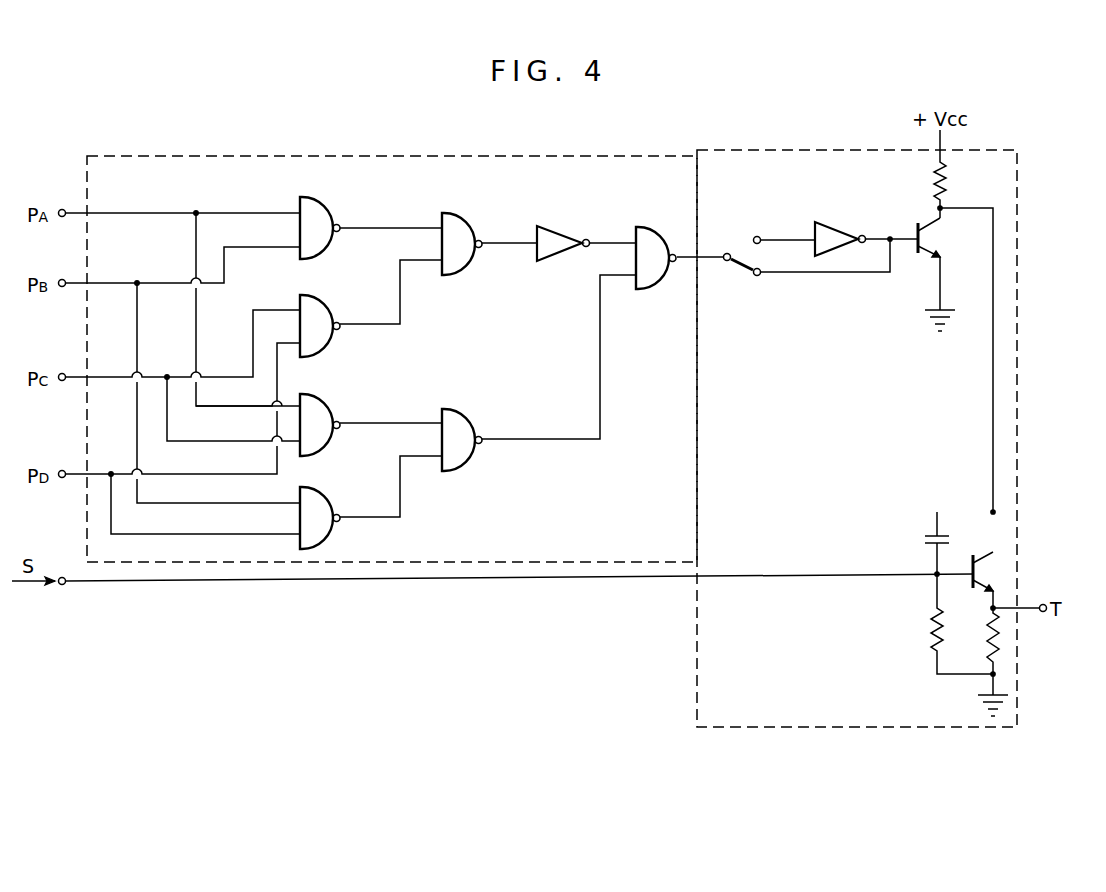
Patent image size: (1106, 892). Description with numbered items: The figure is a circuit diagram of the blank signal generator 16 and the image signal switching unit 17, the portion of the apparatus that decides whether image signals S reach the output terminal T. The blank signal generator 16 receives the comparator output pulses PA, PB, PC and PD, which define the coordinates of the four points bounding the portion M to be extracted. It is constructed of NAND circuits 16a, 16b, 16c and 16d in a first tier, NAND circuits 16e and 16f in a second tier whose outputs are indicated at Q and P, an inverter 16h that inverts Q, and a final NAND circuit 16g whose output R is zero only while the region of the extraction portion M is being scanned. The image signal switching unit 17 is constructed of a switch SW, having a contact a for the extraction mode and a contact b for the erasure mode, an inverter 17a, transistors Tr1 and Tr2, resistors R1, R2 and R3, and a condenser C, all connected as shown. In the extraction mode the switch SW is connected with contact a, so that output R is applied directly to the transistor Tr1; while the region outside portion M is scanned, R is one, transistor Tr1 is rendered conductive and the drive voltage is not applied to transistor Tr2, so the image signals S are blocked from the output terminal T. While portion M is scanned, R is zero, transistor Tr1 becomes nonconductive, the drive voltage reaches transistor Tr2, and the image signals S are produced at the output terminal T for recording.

The blank signal generator 16 is at (450, 166).
The NAND circuit 16a is at (327, 210).
The NAND circuit 16b is at (327, 306).
The NAND circuit 16c is at (322, 403).
The NAND circuit 16d is at (327, 498).
The NAND circuit 16e is at (459, 214).
The NAND circuit 16f is at (458, 412).
The NAND circuit 16g is at (655, 227).
The inverter 16h is at (567, 228).
The image signal switching unit 17 is at (815, 158).
The inverter 17a is at (837, 226).
The switch SW is at (743, 254).
The resistor R1 is at (953, 174).
The resistor R2 is at (944, 624).
The resistor R3 is at (979, 641).
The condenser C is at (926, 543).
The transistor Tr1 is at (947, 274).
The transistor Tr2 is at (990, 571).